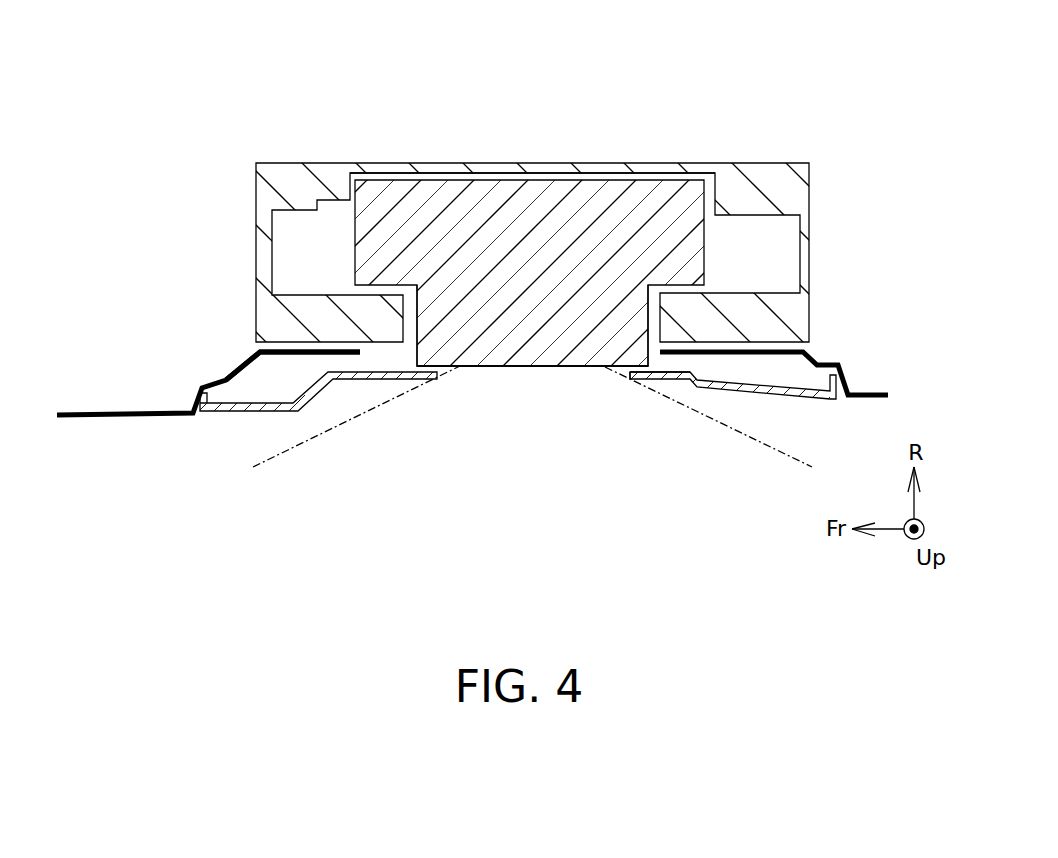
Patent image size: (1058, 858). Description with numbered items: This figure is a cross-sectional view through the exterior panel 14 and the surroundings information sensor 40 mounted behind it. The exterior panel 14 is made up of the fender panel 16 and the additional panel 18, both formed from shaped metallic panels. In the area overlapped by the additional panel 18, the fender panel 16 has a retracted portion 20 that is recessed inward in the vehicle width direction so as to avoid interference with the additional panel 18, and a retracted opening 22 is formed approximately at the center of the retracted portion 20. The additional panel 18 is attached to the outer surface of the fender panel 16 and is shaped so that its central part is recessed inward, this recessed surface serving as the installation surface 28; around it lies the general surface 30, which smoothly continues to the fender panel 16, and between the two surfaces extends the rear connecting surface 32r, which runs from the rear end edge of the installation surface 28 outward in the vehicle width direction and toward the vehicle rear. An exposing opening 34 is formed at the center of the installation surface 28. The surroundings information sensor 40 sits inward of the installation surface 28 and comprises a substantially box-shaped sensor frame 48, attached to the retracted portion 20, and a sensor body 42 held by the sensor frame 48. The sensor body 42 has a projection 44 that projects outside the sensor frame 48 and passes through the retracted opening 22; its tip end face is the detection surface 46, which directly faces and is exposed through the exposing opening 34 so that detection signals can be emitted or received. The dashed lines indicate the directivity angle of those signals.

The exterior panel 14 is at (183, 438).
The fender panel 16 is at (867, 392).
The additional panel 18 is at (250, 420).
The retracted portion 20 is at (772, 347).
The retracted opening 22 is at (360, 352).
The installation surface 28 is at (667, 375).
The general surface 30 is at (827, 395).
The rear connecting surface 32r is at (323, 397).
The exposing opening 34 is at (620, 368).
The surroundings information sensor 40 is at (475, 95).
The sensor body 42 is at (495, 203).
The projection 44 is at (488, 323).
The detection surface 46 is at (532, 367).
The sensor frame 48 is at (557, 173).